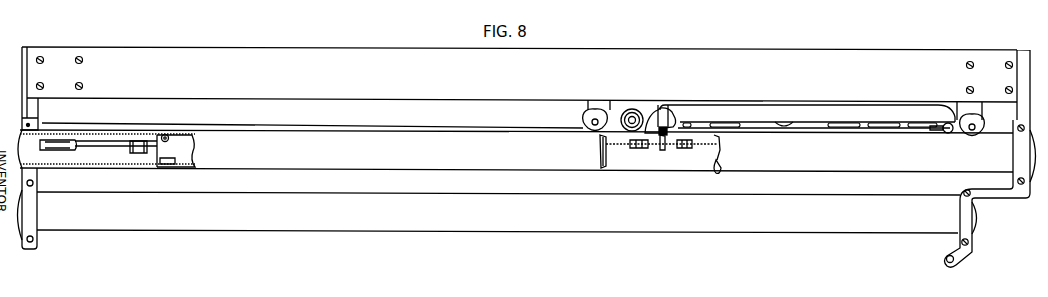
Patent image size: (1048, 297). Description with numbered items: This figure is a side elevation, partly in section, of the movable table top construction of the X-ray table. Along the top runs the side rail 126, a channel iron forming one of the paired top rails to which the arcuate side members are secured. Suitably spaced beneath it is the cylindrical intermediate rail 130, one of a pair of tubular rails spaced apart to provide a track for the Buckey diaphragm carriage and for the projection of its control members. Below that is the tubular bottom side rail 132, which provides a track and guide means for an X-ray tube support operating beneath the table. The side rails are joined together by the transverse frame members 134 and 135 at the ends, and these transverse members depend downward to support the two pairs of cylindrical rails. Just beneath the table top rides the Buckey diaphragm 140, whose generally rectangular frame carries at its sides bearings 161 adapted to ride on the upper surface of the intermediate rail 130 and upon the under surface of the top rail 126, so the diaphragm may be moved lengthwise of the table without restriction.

The top rail 126 is at (835, 55).
The intermediate rail 130 is at (882, 165).
The bottom side rail 132 is at (705, 226).
The transverse frame member 134 is at (1025, 50).
The transverse frame member 135 is at (26, 46).
The Buckey diaphragm 140 is at (662, 108).
The bearing 161 is at (597, 113).